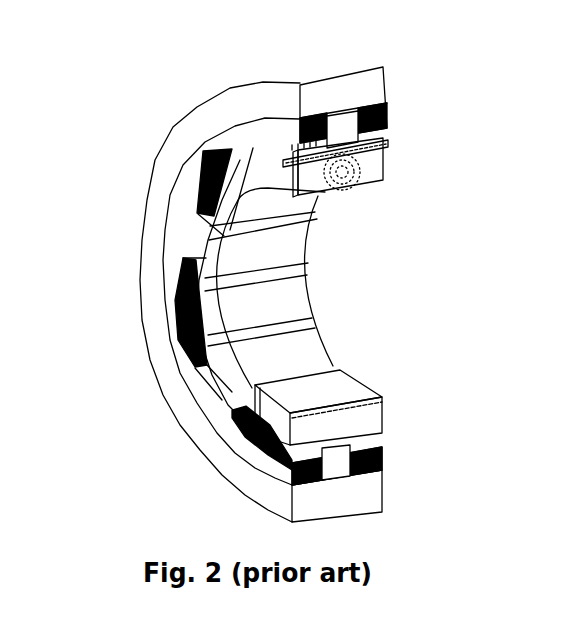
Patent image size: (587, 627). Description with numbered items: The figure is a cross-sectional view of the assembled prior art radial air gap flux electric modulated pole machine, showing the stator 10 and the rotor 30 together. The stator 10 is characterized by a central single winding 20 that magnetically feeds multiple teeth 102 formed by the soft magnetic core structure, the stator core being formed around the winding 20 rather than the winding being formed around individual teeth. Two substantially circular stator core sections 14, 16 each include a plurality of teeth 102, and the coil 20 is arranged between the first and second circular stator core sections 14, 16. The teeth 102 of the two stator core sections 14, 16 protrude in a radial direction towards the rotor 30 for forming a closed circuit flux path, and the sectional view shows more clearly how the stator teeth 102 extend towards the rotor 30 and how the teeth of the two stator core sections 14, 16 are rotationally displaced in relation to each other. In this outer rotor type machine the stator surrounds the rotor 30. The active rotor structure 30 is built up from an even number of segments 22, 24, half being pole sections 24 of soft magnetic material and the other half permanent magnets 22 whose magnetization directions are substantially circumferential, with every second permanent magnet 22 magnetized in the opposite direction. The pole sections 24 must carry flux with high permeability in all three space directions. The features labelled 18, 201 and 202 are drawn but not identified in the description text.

The stator 10 is at (333, 463).
The first stator core section 14 is at (388, 109).
The second stator core section 16 is at (168, 253).
The back iron ring 18 is at (178, 150).
The winding 20 is at (350, 130).
The permanent magnets 22 is at (300, 323).
The pole sections 24 is at (293, 289).
The rotor 30 is at (335, 372).
The teeth 102 is at (215, 383).
The sensor module 201 is at (363, 167).
The circuit board 202 is at (385, 156).